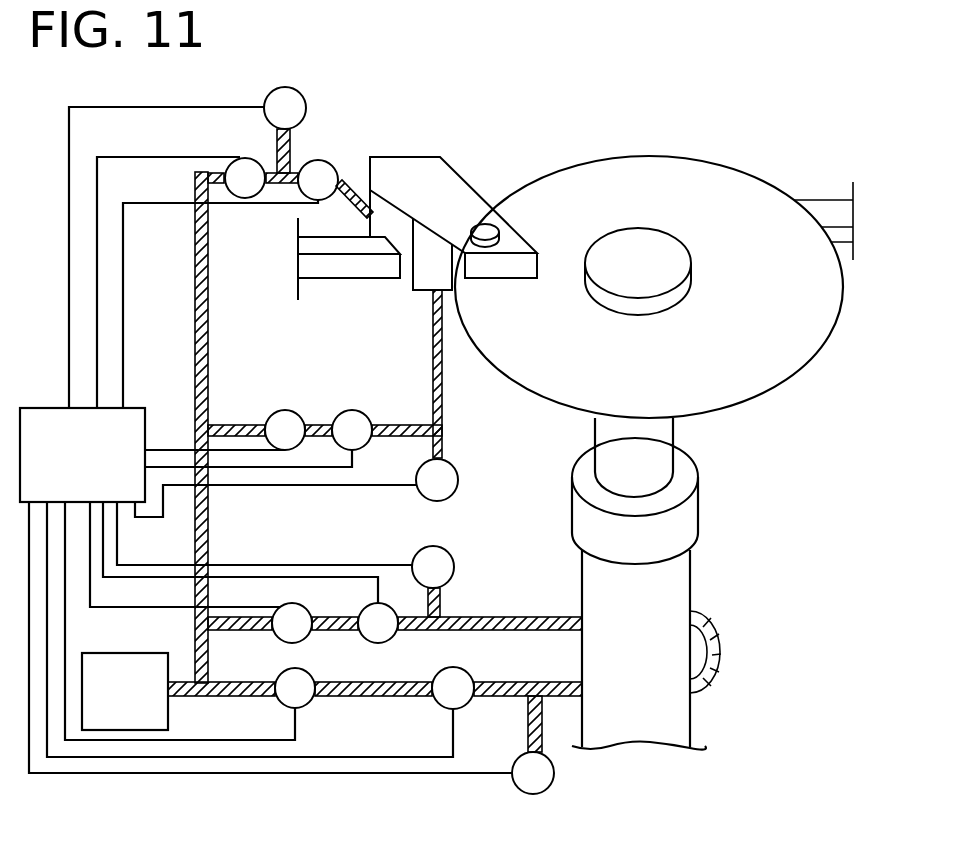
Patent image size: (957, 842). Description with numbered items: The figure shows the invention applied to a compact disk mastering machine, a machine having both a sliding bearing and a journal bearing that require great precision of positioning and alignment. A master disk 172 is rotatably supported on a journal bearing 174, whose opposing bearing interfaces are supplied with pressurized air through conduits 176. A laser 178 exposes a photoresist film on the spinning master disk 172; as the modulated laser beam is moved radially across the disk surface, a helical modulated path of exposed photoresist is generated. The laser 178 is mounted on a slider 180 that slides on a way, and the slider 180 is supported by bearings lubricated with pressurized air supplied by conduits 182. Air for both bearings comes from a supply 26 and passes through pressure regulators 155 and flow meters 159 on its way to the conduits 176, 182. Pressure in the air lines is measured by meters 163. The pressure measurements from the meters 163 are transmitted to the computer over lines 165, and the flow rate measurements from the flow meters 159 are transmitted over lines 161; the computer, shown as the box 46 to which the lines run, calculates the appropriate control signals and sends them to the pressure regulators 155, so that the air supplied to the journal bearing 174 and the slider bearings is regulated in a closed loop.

The supply 26 is at (125, 691).
The controller 46 is at (82, 455).
The pressure regulators 155 is at (270, 433).
The flow meters 159 is at (386, 434).
The lines 161 is at (274, 206).
The meters 163 is at (409, 440).
The lines 165 is at (218, 107).
The master disk 172 is at (638, 157).
The journal bearing 174 is at (692, 592).
The conduits 176 is at (541, 617).
The laser 178 is at (485, 226).
The slider 180 is at (440, 155).
The conduits 182 is at (353, 178).